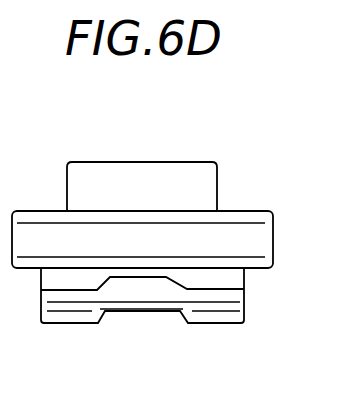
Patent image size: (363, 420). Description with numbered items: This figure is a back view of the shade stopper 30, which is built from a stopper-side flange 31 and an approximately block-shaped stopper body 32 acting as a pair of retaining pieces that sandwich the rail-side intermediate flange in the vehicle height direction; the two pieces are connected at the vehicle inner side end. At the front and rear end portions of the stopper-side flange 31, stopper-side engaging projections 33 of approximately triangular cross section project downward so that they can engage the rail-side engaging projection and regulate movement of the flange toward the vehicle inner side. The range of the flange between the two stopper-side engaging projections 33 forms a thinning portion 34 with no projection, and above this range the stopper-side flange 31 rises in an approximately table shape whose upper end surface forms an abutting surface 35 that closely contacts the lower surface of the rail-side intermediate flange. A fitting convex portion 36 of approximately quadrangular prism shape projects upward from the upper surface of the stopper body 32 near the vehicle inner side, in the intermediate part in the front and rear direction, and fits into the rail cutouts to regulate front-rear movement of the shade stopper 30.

The shade stopper 30 is at (182, 130).
The stopper-side flange 31 is at (247, 295).
The stopper body 32 is at (255, 236).
The stopper-side engaging projections 33 is at (65, 325).
The thinning portion 34 is at (140, 318).
The abutting surface 35 is at (138, 277).
The fitting convex portion 36 is at (122, 182).